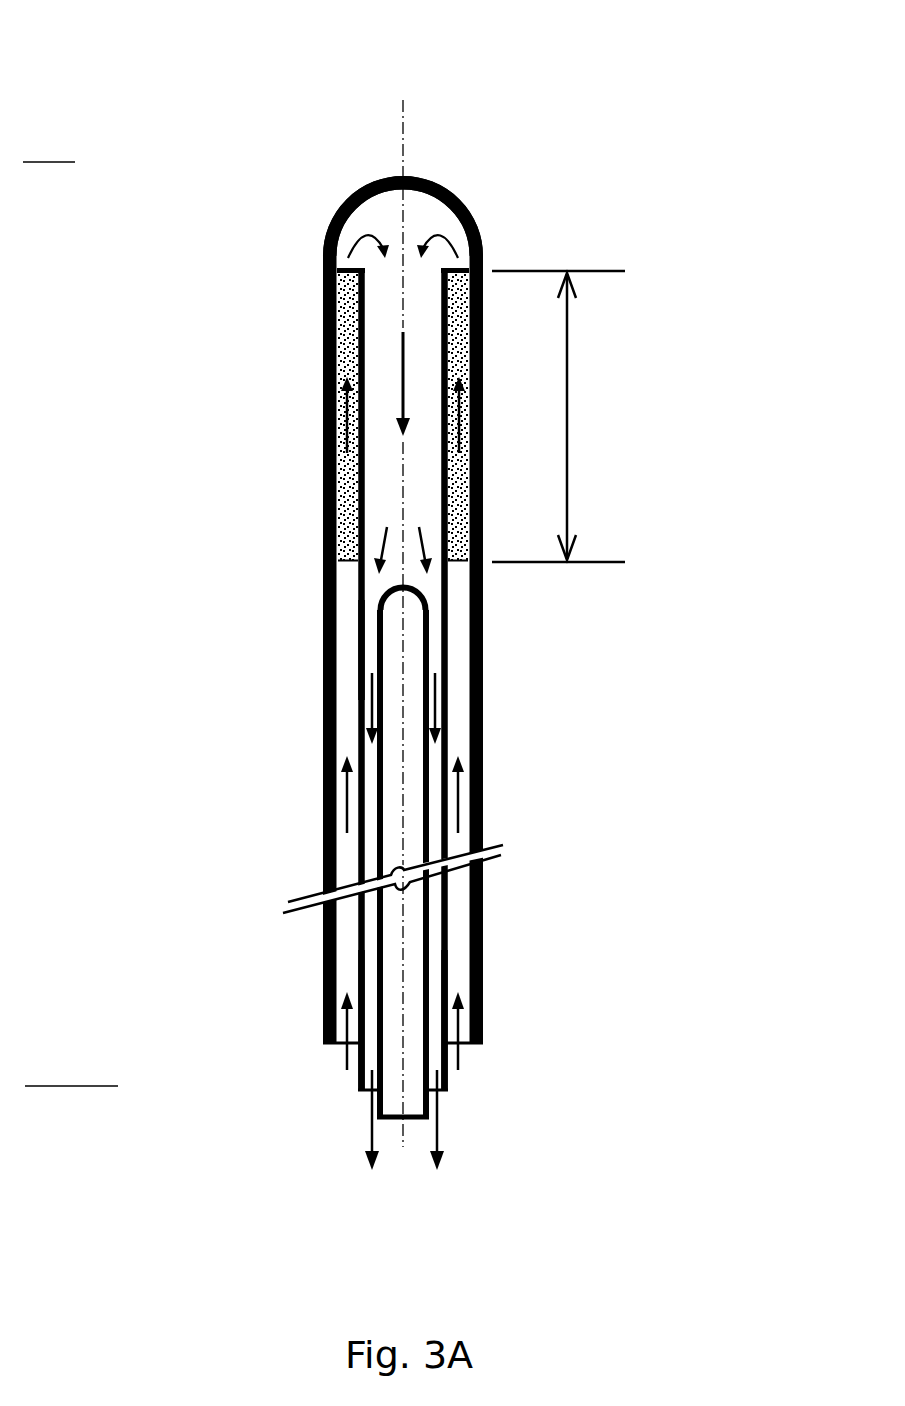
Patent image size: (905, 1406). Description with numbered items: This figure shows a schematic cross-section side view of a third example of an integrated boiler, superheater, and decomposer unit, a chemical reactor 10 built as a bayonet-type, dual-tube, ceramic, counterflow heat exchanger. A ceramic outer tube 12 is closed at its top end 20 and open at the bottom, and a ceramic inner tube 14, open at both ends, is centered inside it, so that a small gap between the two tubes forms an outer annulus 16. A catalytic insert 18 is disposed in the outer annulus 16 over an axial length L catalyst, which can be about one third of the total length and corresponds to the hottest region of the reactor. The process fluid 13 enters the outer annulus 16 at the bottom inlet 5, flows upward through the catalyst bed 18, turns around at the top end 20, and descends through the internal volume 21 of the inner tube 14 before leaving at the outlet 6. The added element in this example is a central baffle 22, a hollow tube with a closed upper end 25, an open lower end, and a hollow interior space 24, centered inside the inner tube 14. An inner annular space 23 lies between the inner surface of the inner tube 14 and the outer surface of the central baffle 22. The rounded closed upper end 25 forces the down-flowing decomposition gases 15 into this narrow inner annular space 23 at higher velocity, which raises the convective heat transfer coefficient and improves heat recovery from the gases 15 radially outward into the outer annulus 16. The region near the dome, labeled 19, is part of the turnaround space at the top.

The chemical reactor 10 is at (237, 47).
The outer tube 12 is at (487, 707).
The process fluid 13 is at (343, 800).
The inner tube 14 is at (452, 952).
The decomposition gases 15 is at (407, 368).
The outer annulus 16 is at (348, 663).
The catalytic insert 18 is at (350, 492).
The dome interior space 19 is at (380, 215).
The top end 20 is at (455, 185).
The internal volume 21 is at (418, 489).
The central baffle 22 is at (430, 645).
The inner annular space 23 is at (368, 953).
The hollow interior space 24 is at (415, 780).
The closed upper end 25 is at (378, 592).
The bottom inlet 5 is at (415, 1050).
The outlet 6 is at (417, 1140).